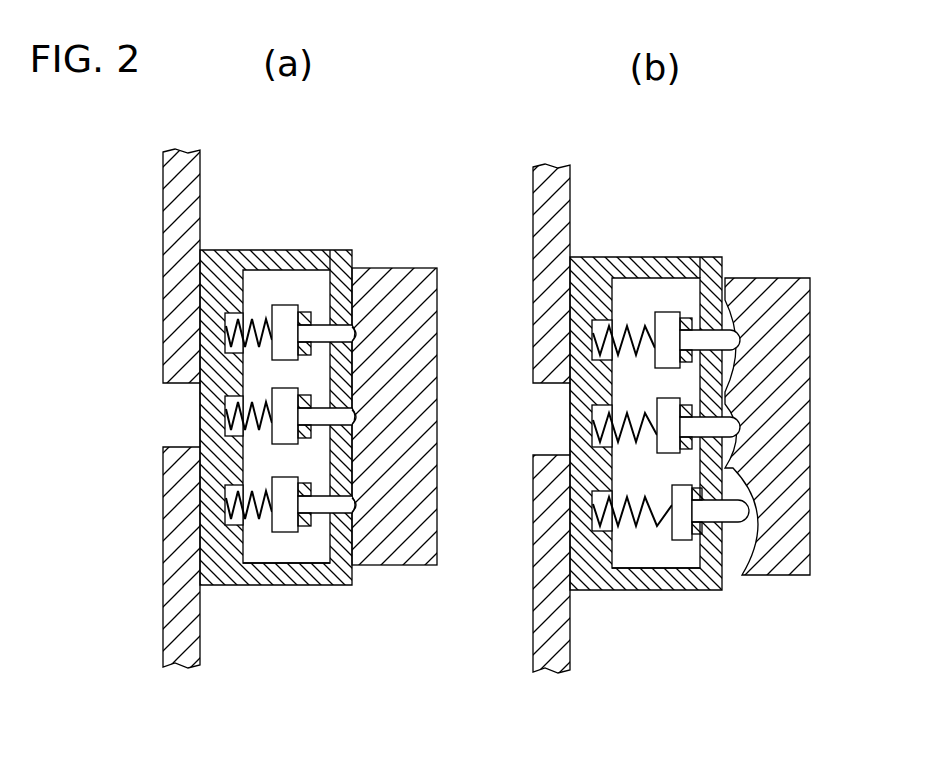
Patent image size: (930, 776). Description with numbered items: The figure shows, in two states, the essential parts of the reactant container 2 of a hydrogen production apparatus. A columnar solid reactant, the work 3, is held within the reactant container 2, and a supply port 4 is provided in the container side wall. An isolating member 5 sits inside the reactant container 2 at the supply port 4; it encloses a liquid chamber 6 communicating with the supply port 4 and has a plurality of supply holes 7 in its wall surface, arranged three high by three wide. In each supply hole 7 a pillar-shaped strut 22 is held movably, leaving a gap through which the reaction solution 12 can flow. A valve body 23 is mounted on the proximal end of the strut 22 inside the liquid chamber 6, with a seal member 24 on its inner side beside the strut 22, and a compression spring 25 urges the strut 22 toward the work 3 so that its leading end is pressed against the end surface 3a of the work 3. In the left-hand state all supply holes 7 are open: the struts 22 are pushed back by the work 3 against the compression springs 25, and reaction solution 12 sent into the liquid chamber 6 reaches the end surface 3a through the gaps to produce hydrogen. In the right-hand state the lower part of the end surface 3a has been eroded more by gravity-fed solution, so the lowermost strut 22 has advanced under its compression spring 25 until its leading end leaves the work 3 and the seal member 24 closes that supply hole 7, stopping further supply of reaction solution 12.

The reactant container 2 is at (170, 210).
The work 3 is at (400, 282).
The end surface 3a is at (345, 255).
The supply port 4 is at (178, 383).
The isolating member 5 is at (207, 273).
The liquid chamber 6 is at (276, 552).
The supply hole 7 is at (358, 345).
The reaction solution 12 is at (315, 550).
The strut 22 is at (317, 325).
The valve body 23 is at (280, 303).
The seal member 24 is at (297, 308).
The compression spring 25 is at (233, 313).